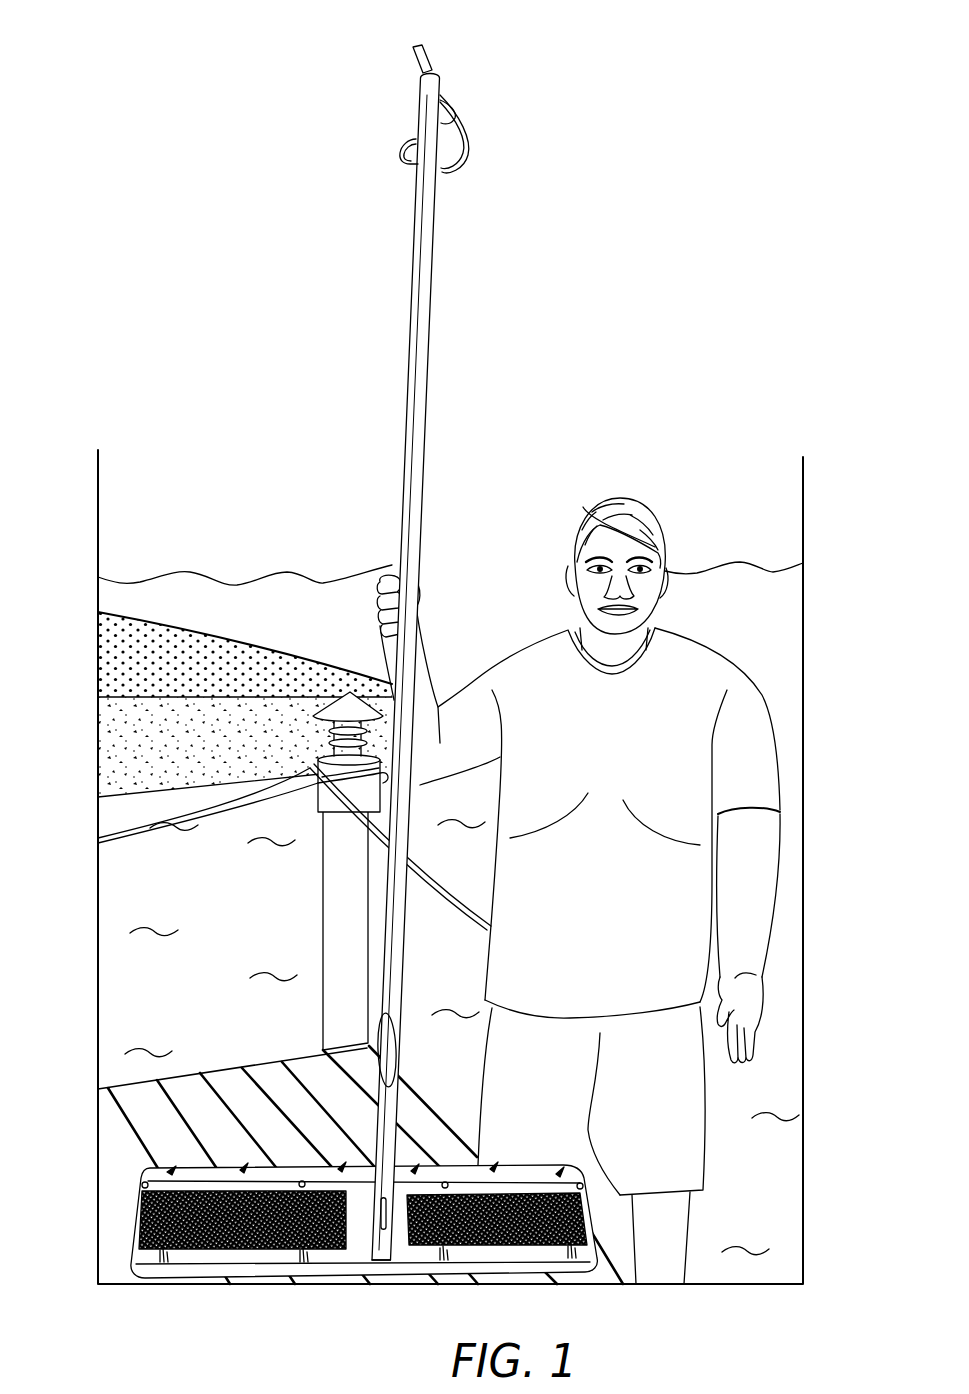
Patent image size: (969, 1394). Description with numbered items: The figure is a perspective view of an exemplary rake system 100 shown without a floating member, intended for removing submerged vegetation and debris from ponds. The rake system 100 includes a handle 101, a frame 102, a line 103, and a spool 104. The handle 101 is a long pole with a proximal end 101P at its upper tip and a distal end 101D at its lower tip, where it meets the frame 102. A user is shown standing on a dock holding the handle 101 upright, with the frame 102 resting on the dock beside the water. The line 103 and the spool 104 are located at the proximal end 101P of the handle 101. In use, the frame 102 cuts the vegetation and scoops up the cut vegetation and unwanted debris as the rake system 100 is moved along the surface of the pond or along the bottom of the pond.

The rake system 100 is at (417, 665).
The handle 101 is at (436, 685).
The proximal end 101P is at (423, 96).
The distal end 101D is at (383, 1264).
The frame 102 is at (160, 1172).
The line 103 is at (470, 151).
The spool 104 is at (440, 97).